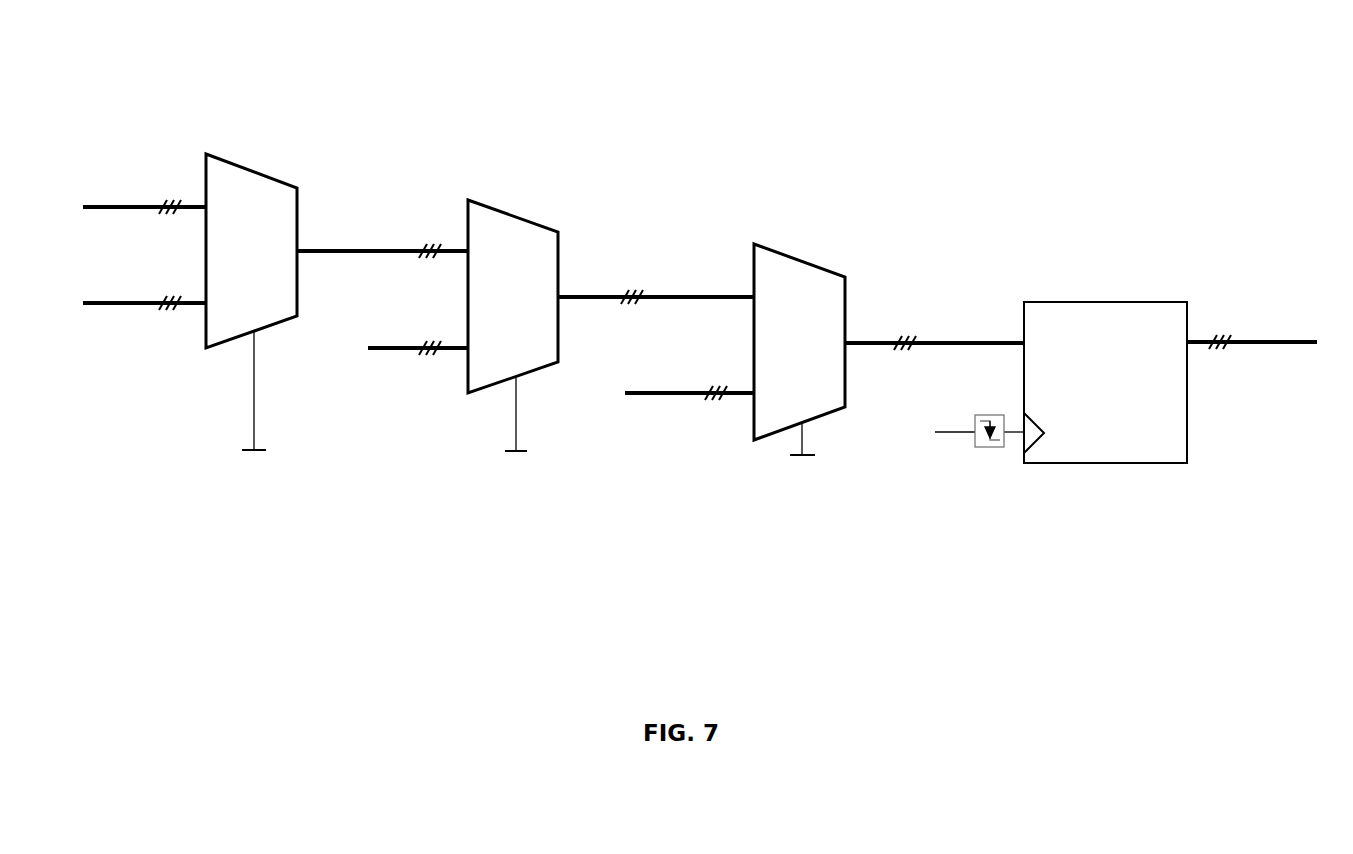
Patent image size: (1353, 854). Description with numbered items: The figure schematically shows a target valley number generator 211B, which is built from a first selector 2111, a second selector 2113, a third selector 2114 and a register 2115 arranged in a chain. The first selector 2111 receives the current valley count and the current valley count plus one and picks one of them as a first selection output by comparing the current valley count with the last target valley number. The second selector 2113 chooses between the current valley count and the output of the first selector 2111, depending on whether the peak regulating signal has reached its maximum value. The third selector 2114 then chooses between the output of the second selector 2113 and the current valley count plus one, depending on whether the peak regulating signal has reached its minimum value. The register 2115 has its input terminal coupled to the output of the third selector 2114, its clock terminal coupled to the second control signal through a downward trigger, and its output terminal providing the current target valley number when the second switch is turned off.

The target valley number generator 211B is at (947, 106).
The first selector 2111 is at (268, 172).
The second selector 2113 is at (524, 217).
The third selector 2114 is at (795, 258).
The register 2115 is at (1095, 302).